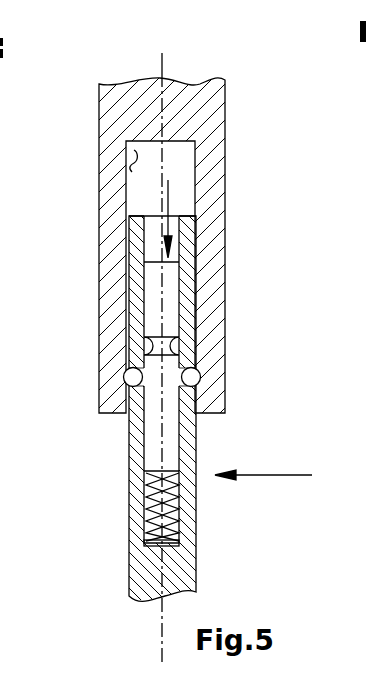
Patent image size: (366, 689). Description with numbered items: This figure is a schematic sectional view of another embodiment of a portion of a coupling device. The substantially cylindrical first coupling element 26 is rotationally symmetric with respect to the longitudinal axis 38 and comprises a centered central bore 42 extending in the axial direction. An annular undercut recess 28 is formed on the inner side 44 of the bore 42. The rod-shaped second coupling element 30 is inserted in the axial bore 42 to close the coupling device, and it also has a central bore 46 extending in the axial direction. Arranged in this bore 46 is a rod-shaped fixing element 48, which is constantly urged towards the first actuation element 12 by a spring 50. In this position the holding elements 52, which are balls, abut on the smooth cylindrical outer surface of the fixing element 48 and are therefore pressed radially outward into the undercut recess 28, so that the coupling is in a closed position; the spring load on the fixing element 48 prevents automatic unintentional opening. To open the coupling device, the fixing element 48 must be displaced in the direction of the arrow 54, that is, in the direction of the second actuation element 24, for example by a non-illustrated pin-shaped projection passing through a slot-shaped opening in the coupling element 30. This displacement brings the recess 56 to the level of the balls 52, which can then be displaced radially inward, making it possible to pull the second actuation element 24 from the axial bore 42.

The first actuation element 12 is at (197, 102).
The second actuation element 24 is at (150, 572).
The first coupling element 26 is at (205, 238).
The undercut recess 28 is at (203, 380).
The second coupling element 30 is at (278, 478).
The longitudinal axis 38 is at (158, 67).
The central bore 42 is at (175, 161).
The inner side 44 is at (134, 163).
The central bore 46 is at (175, 482).
The fixing element 48 is at (167, 407).
The spring 50 is at (183, 524).
The holding elements 52 is at (126, 378).
The arrow 54 is at (170, 202).
The recess 56 is at (145, 347).